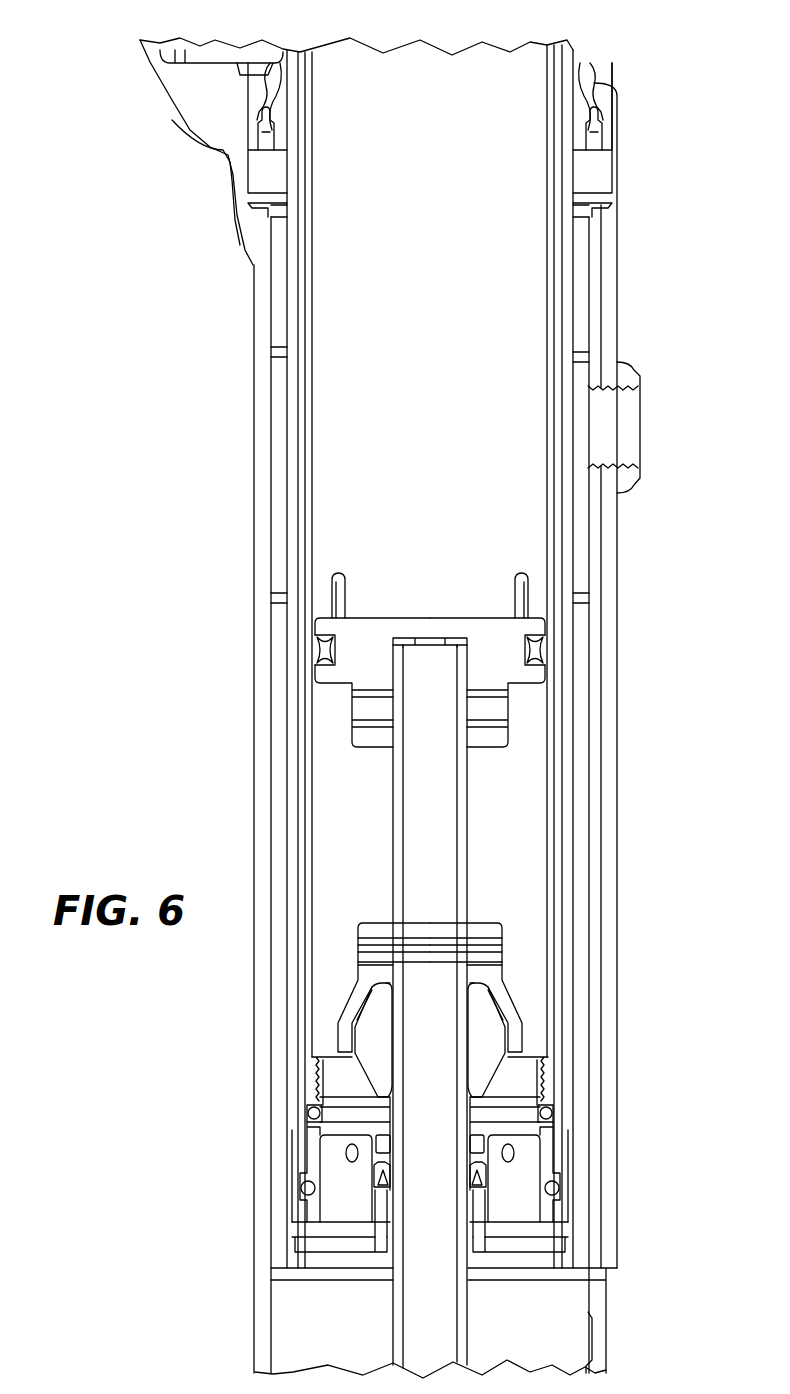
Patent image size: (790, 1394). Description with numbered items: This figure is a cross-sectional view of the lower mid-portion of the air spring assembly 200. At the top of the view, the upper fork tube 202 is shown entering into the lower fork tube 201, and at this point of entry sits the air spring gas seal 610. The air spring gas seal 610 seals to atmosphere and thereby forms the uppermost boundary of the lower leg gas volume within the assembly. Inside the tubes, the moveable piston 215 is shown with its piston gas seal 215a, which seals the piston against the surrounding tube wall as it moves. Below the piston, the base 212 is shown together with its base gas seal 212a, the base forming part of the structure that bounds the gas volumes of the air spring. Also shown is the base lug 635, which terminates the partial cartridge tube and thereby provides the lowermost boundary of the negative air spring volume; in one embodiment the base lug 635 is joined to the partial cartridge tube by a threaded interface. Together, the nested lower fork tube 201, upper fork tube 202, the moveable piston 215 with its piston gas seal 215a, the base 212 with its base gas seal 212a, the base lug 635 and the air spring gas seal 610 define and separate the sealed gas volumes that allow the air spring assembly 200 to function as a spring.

The air spring assembly 200 is at (612, 44).
The lower fork tube 201 is at (603, 605).
The upper fork tube 202 is at (575, 48).
The air spring gas seal 610 is at (607, 103).
The base lug 635 is at (582, 705).
The moveable piston 215 is at (317, 627).
The piston gas seal 215a is at (318, 650).
The base 212 is at (310, 1210).
The base gas seal 212a is at (308, 1113).